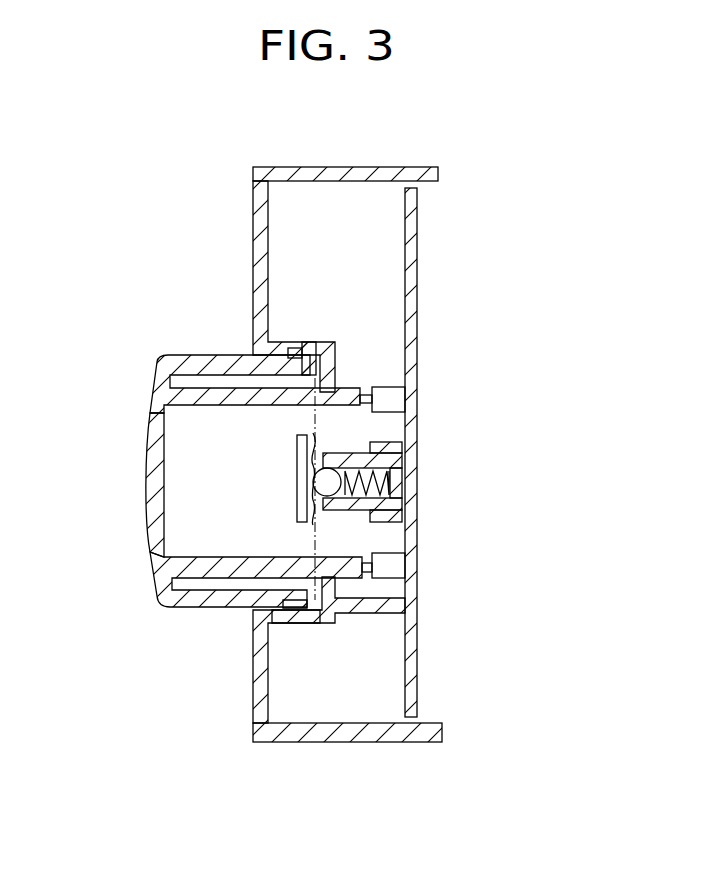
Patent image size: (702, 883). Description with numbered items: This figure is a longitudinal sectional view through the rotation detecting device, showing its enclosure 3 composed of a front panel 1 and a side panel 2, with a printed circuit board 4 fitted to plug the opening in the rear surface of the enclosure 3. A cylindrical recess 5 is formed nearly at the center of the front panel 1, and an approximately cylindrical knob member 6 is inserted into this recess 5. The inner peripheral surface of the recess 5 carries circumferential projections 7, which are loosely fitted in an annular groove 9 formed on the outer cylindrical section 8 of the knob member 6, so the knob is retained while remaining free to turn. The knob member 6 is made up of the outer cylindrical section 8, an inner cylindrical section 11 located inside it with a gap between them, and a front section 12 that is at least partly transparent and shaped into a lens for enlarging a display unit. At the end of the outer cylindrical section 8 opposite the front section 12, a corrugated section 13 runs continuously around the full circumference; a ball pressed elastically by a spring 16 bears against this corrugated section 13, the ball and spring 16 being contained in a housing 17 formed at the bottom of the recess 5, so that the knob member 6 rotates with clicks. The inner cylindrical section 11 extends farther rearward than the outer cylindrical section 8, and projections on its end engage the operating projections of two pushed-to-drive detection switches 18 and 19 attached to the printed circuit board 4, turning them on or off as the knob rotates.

The front panel 1 is at (256, 218).
The side panel 2 is at (357, 167).
The enclosure 3 is at (243, 174).
The printed circuit board 4 is at (412, 252).
The cylindrical recess 5 is at (258, 628).
The knob member 6 is at (176, 351).
The projections 7 is at (298, 356).
The outer cylindrical section 8 is at (183, 608).
The annular groove 9 is at (250, 353).
The inner cylindrical section 11 is at (150, 539).
The front section 12 is at (150, 437).
The corrugated section 13 is at (336, 468).
The spring 16 is at (402, 498).
The housing 17 is at (402, 440).
The detection switch 18 is at (398, 565).
The detection switch 19 is at (388, 380).